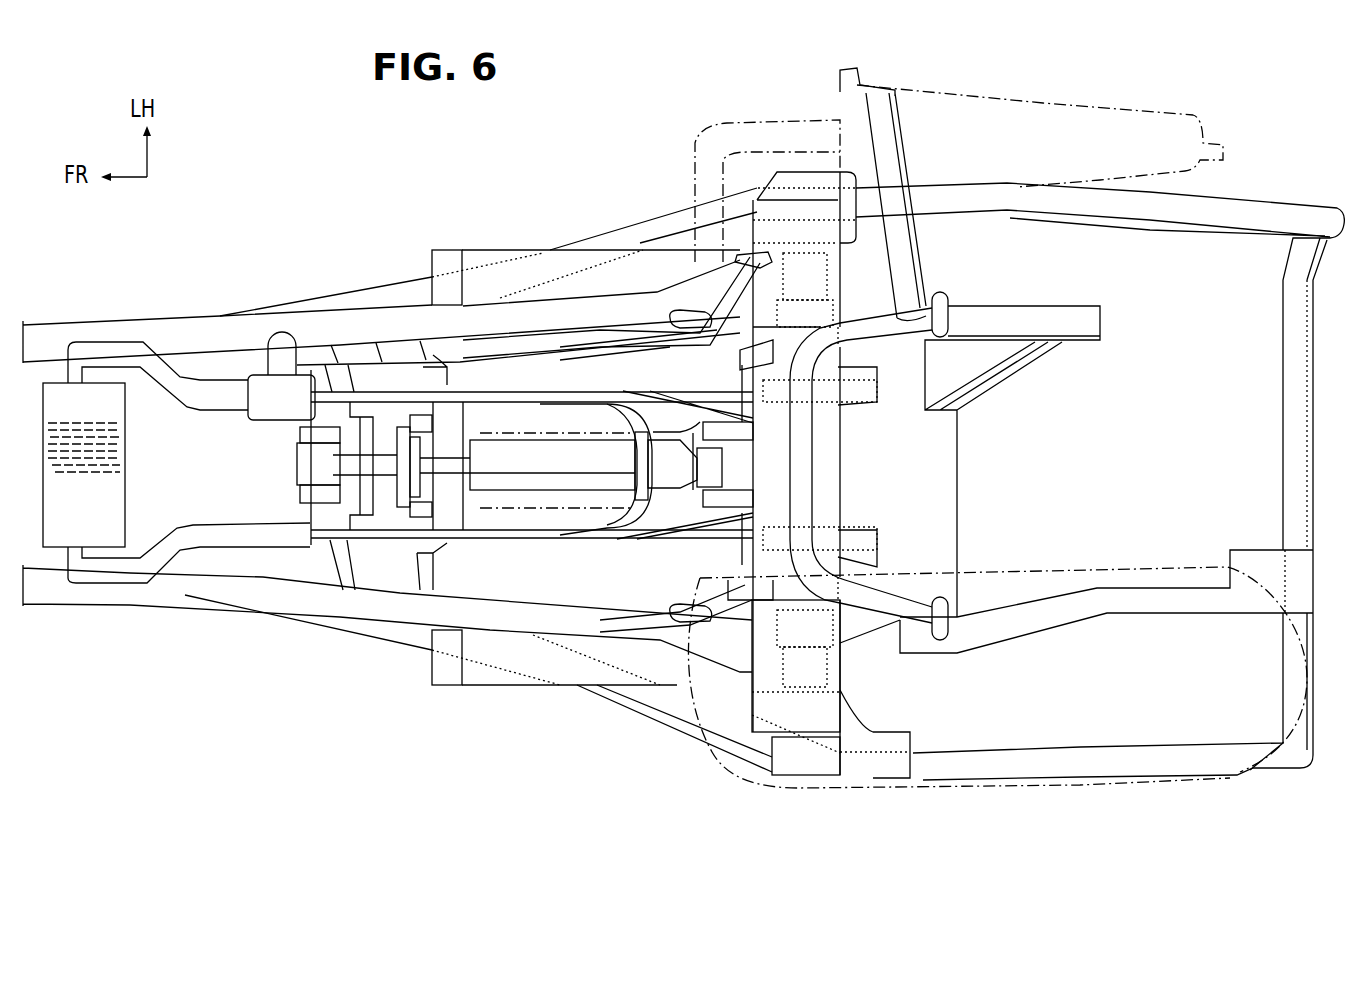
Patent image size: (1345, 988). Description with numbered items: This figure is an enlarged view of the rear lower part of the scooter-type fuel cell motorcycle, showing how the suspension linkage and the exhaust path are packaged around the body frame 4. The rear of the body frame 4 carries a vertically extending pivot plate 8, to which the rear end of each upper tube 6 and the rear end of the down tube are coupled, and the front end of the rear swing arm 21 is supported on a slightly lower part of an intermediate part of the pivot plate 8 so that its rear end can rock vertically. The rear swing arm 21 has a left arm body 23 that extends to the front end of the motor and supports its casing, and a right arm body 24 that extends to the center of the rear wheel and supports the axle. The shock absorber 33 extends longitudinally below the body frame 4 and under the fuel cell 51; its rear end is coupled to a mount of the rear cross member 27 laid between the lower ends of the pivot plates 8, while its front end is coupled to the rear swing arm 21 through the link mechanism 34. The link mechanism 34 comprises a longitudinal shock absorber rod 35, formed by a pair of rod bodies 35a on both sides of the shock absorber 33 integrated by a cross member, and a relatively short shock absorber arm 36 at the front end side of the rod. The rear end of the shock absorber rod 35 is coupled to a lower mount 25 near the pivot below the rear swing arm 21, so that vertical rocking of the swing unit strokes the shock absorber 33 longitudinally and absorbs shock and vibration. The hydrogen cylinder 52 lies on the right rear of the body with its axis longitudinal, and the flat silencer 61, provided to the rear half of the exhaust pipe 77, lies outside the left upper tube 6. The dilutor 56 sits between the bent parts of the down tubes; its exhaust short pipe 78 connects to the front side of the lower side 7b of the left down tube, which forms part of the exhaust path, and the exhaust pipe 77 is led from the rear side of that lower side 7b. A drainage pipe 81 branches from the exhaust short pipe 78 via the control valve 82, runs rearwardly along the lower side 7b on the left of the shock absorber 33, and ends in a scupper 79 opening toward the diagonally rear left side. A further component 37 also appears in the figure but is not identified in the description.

The body frame 4 is at (218, 310).
The upper tube 6 is at (1257, 210).
The lower side 7b is at (286, 322).
The pivot plate 8 is at (795, 170).
The rear swing arm 21 is at (945, 662).
The left arm body 23 is at (1022, 320).
The right arm body 24 is at (982, 638).
The lower mount 25 is at (857, 398).
The rear cross member 27 is at (838, 675).
The shock absorber 33 is at (593, 473).
The link mechanism 34 is at (375, 708).
The shock absorber rod 35 is at (388, 550).
The rod bodies 35a is at (550, 397).
The shock absorber arm 36 is at (300, 512).
The U-shaped pipe member 37 is at (883, 603).
The fuel cell 51 is at (428, 245).
The hydrogen cylinder 52 is at (1090, 560).
The canister 56 is at (127, 485).
The silencer 61 is at (1043, 103).
The exhaust pipe 77 is at (818, 106).
The exhaust short pipe 78 is at (190, 405).
The scupper 79 is at (760, 260).
The drainage pipe 81 is at (627, 348).
The control valve 82 is at (273, 415).